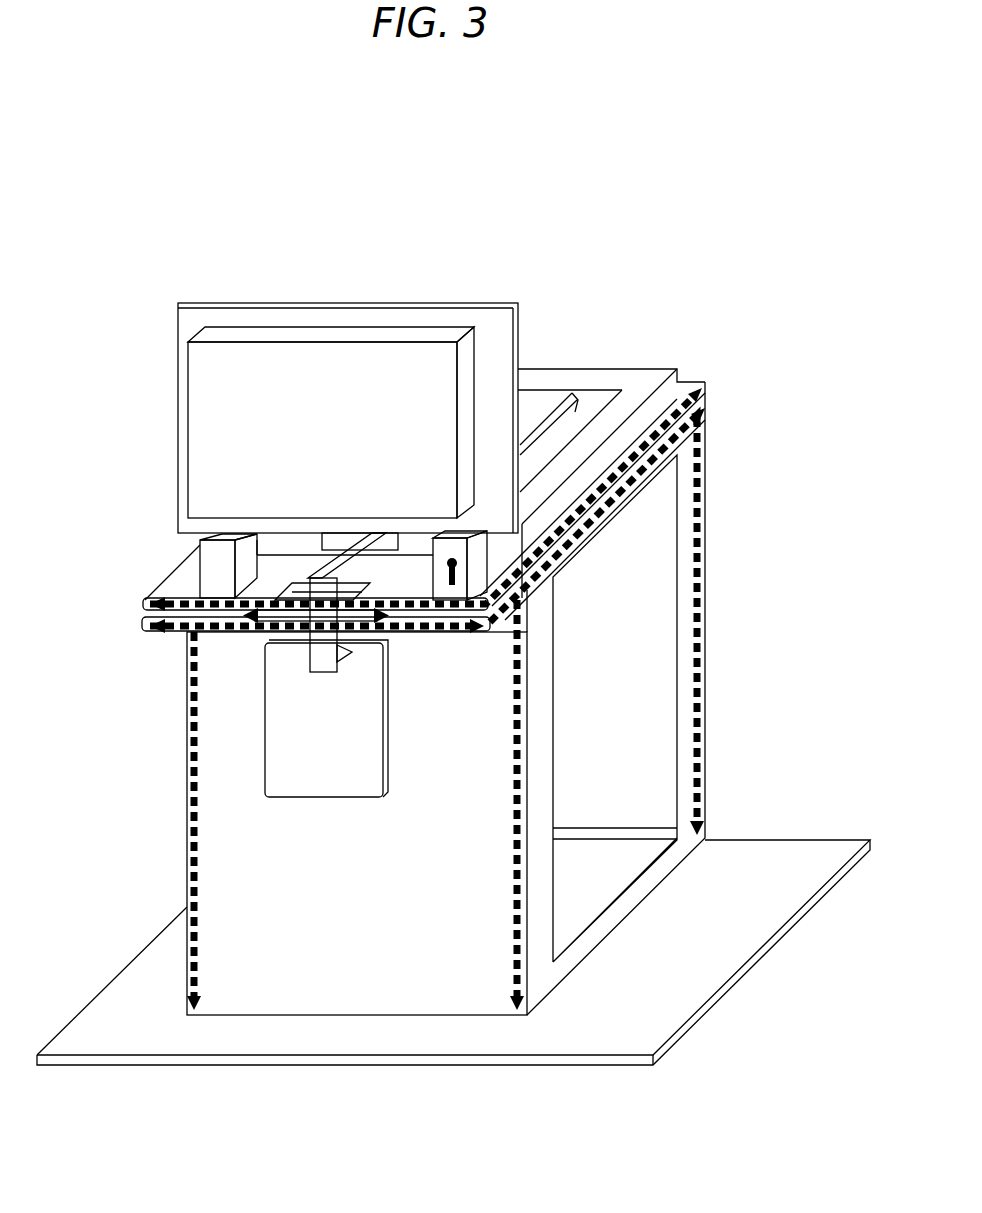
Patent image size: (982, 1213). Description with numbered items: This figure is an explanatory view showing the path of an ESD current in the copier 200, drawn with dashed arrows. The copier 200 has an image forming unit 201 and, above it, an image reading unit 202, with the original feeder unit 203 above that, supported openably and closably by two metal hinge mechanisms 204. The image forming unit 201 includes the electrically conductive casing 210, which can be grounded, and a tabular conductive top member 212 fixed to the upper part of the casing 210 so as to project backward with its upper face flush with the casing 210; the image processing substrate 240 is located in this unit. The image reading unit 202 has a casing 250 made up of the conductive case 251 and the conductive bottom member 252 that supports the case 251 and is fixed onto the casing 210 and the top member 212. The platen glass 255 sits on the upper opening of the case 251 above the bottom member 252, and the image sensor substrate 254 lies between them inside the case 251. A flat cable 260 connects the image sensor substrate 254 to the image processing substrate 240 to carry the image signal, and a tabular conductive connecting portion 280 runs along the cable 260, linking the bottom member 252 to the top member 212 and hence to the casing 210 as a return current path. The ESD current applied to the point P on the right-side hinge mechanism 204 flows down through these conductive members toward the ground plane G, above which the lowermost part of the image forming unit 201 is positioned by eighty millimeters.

The copier 200 is at (423, 203).
The image forming unit 201 is at (722, 658).
The image reading unit 202 is at (692, 364).
The original feeder unit 203 is at (265, 303).
The hinge mechanism 204 is at (213, 562).
The casing 210 is at (187, 758).
The top member 212 is at (143, 622).
The image processing substrate 240 is at (275, 765).
The casing of the image reading unit 250 is at (795, 370).
The case 251 is at (705, 393).
The bottom member 252 is at (705, 423).
The image sensor substrate 254 is at (592, 418).
The platen glass 255 is at (540, 410).
The cable 260 is at (330, 540).
The connecting portion 280 is at (343, 613).
The point P is at (553, 560).
The ground plane G is at (773, 857).